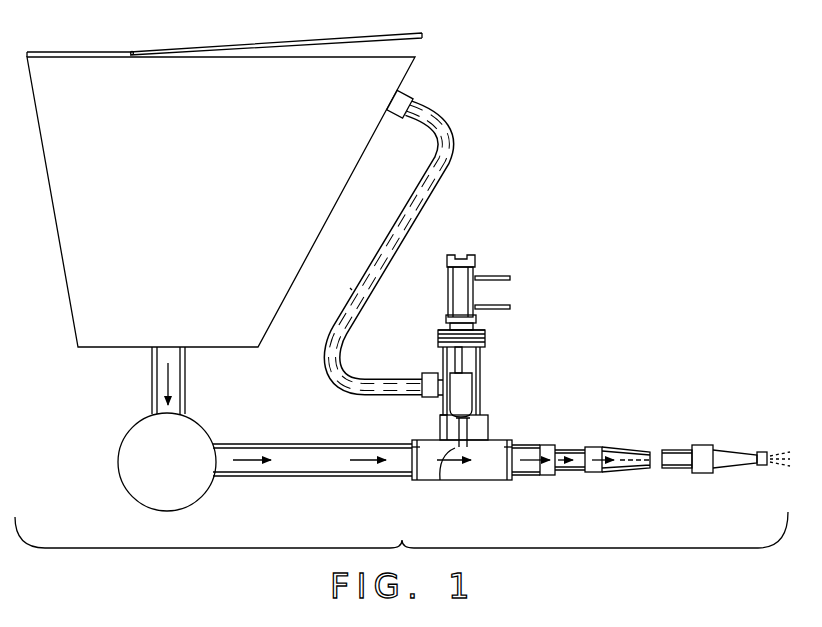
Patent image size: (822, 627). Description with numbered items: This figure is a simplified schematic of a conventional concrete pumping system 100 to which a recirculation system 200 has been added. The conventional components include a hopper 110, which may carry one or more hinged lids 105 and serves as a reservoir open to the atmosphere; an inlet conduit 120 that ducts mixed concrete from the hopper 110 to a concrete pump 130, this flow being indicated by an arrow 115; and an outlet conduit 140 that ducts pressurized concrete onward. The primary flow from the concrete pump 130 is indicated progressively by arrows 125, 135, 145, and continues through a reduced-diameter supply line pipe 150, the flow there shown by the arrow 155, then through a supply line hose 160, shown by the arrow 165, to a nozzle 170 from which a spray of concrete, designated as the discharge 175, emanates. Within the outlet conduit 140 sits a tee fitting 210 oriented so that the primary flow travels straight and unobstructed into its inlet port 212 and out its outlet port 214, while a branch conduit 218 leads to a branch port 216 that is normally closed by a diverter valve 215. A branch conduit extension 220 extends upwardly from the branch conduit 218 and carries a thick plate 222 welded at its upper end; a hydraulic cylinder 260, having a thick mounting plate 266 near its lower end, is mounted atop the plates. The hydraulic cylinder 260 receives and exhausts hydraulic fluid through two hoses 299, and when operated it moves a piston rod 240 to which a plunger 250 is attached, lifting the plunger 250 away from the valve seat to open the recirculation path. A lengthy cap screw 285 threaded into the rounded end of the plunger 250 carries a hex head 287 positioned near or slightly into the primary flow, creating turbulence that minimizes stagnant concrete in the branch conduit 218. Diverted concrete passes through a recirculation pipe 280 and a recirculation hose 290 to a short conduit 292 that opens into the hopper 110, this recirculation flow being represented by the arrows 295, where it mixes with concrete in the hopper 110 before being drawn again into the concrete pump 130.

The concrete pumping system 100 is at (104, 441).
The hinged lid 105 is at (300, 40).
The hopper 110 is at (193, 192).
The arrow 115 is at (158, 392).
The inlet conduit 120 is at (183, 388).
The arrow 125 is at (262, 477).
The concrete pump 130 is at (183, 460).
The arrow 135 is at (350, 477).
The outlet conduit 140 is at (272, 445).
The arrow 145 is at (476, 470).
The supply line pipe 150 is at (573, 471).
The arrow 155 is at (548, 446).
The supply line hose 160 is at (660, 450).
The arrow 165 is at (630, 452).
The nozzle 170 is at (722, 448).
The discharge 175 is at (780, 467).
The recirculation system 200 is at (480, 307).
The tee fitting 210 is at (500, 434).
The inlet port 212 is at (412, 481).
The outlet port 214 is at (480, 482).
The diverter valve 215 is at (523, 412).
The branch port 216 is at (440, 422).
The branch conduit 218 is at (488, 432).
The branch conduit extension 220 is at (481, 357).
The thick plate 222 is at (486, 336).
The piston rod 240 is at (462, 366).
The plunger 250 is at (472, 388).
The hydraulic cylinder 260 is at (445, 298).
The mounting plate 266 is at (438, 335).
The recirculation pipe 280 is at (433, 373).
The cap screw 285 is at (458, 433).
The hex head 287 is at (441, 481).
The recirculation hose 290 is at (452, 175).
The short conduit 292 is at (416, 92).
The arrows 295 is at (351, 291).
The hydraulic hoses 299 is at (503, 304).